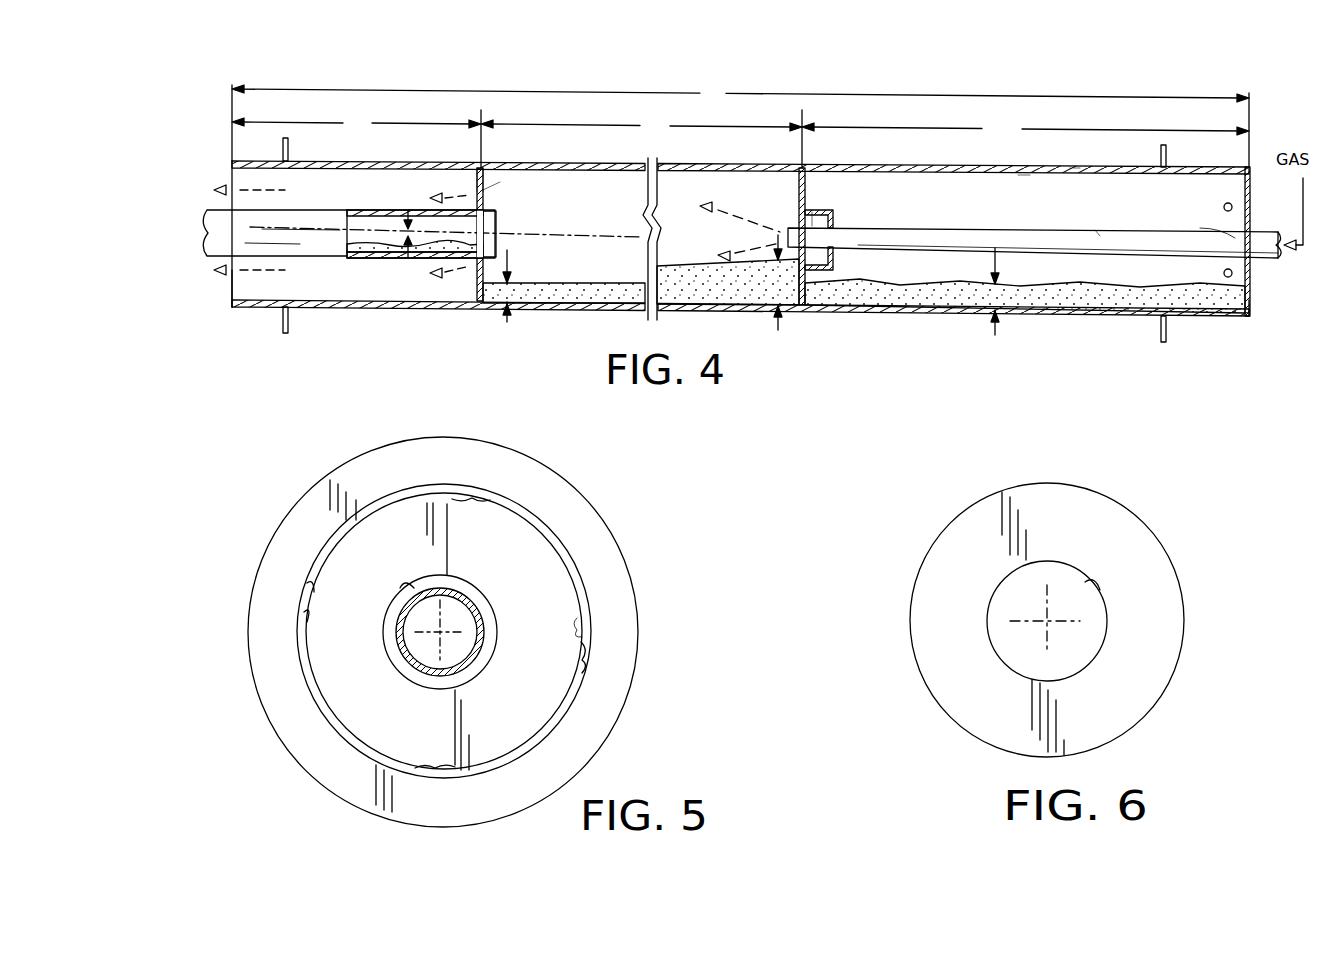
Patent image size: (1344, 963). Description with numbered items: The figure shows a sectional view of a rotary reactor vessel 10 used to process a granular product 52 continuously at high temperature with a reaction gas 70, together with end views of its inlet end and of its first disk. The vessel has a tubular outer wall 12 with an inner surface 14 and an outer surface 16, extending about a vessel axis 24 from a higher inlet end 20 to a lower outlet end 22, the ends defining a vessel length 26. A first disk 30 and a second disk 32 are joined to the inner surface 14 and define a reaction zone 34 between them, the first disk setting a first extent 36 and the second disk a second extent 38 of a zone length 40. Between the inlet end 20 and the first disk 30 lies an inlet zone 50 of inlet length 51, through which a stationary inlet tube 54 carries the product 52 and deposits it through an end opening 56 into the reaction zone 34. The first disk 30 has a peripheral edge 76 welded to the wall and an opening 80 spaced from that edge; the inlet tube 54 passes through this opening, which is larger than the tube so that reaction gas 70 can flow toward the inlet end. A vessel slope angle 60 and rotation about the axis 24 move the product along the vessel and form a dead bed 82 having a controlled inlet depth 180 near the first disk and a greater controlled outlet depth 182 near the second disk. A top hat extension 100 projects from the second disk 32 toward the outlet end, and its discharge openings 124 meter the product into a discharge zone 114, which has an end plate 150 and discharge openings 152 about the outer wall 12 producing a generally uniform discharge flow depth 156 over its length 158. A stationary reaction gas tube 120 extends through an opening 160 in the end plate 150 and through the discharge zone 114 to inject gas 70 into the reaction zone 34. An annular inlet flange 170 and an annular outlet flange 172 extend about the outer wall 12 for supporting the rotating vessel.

In FIG. 4, the reactor vessel 10 is at (1212, 78).
In FIG. 4, the outer wall 12 is at (900, 170).
In FIG. 5, the outer wall 12 is at (548, 535).
In FIG. 4, the inner surface 14 is at (1015, 176).
In FIG. 5, the inner surface 14 is at (582, 632).
In FIG. 4, the outer surface 16 is at (1074, 168).
In FIG. 5, the outer surface 16 is at (580, 567).
In FIG. 4, the inlet end 20 is at (232, 300).
In FIG. 5, the inlet end 20 is at (383, 742).
In FIG. 4, the outlet end 22 is at (1250, 308).
In FIG. 4, the vessel axis 24 is at (585, 236).
In FIG. 5, the vessel axis 24 is at (445, 632).
In FIG. 6, the vessel axis 24 is at (1050, 622).
In FIG. 4, the vessel length 26 is at (740, 126).
In FIG. 4, the first disk 30 is at (470, 192).
In FIG. 5, the first disk 30 is at (555, 688).
In FIG. 6, the first disk 30 is at (1140, 520).
In FIG. 4, the second disk 32 is at (795, 196).
In FIG. 4, the reaction zone 34 is at (634, 199).
In FIG. 4, the first extent 36 is at (486, 200).
In FIG. 4, the second extent 38 is at (801, 160).
In FIG. 4, the zone length 40 is at (641, 126).
In FIG. 4, the inlet zone 50 is at (324, 190).
In FIG. 4, the inlet length 51 is at (356, 139).
In FIG. 4, the granular product 52 is at (380, 252).
In FIG. 4, the inlet tube 54 is at (345, 209).
In FIG. 5, the inlet tube 54 is at (470, 590).
In FIG. 4, the end opening 56 is at (497, 223).
In FIG. 4, the vessel slope angle 60 is at (404, 258).
In FIG. 4, the reaction gas 70 is at (255, 190).
In FIG. 4, the peripheral edge 76 is at (480, 300).
In FIG. 5, the peripheral edge 76 is at (497, 502).
In FIG. 6, the peripheral edge 76 is at (1183, 650).
In FIG. 4, the opening 80 is at (484, 210).
In FIG. 5, the opening 80 is at (406, 592).
In FIG. 6, the opening 80 is at (1100, 592).
In FIG. 4, the dead bed 82 is at (682, 290).
In FIG. 4, the top hat extension 100 is at (836, 215).
In FIG. 4, the discharge zone 114 is at (1058, 209).
In FIG. 4, the reaction gas tube 120 is at (1095, 232).
In FIG. 4, the discharge openings 124 is at (814, 210).
In FIG. 4, the end plate 150 is at (1250, 272).
In FIG. 4, the discharge openings 152 is at (1224, 207).
In FIG. 4, the discharge flow depth 156 is at (995, 335).
In FIG. 4, the length 158 is at (1025, 129).
In FIG. 4, the opening 160 is at (1235, 233).
In FIG. 4, the annular inlet flange 170 is at (285, 333).
In FIG. 5, the annular inlet flange 170 is at (262, 688).
In FIG. 4, the annular outlet flange 172 is at (1163, 340).
In FIG. 4, the controlled inlet depth 180 is at (507, 322).
In FIG. 4, the controlled outlet depth 182 is at (778, 330).